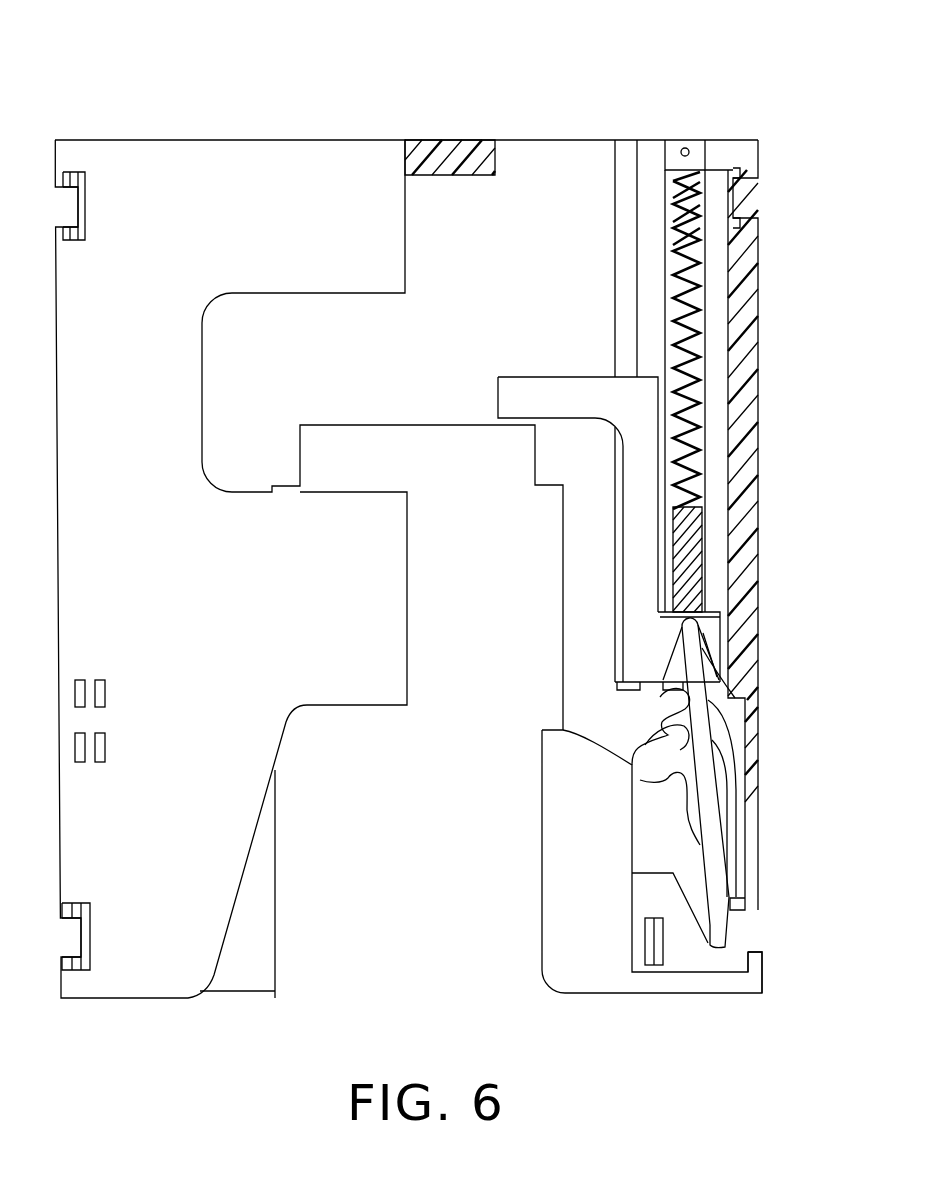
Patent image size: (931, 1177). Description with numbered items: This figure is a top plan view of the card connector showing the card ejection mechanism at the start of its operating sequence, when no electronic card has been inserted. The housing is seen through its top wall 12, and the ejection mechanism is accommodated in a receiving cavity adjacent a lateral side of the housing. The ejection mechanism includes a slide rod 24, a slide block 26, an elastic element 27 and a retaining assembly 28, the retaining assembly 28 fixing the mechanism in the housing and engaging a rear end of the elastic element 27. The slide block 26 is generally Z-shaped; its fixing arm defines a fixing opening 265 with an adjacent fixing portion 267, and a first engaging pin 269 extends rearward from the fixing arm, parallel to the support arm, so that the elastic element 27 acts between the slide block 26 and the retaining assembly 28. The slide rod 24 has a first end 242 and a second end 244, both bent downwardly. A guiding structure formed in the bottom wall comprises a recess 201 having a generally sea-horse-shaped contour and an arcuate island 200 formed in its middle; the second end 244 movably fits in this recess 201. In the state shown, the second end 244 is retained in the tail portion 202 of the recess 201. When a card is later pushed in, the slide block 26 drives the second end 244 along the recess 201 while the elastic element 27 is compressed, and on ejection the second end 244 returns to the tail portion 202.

The top wall 12 is at (215, 172).
The retaining assembly 28 is at (676, 143).
The elastic element 27 is at (703, 347).
The slide block 26 is at (632, 470).
The first end 242 is at (680, 612).
The slide rod 24 is at (686, 683).
The first engaging pin 269 is at (690, 548).
The fixing opening 265 is at (705, 640).
The fixing portion 267 is at (733, 699).
The arcuate island 200 is at (660, 752).
The recess 201 is at (730, 822).
The second end 244 is at (722, 900).
The tail portion 202 is at (735, 942).